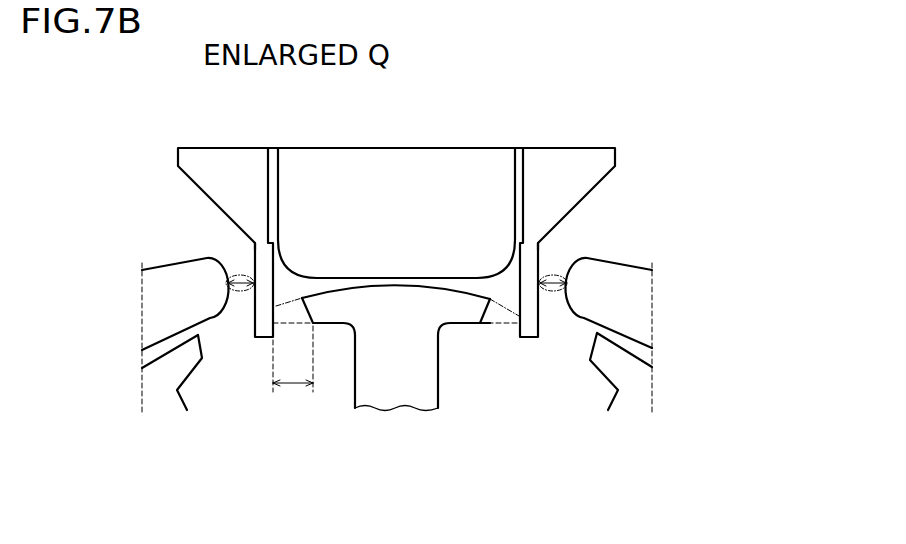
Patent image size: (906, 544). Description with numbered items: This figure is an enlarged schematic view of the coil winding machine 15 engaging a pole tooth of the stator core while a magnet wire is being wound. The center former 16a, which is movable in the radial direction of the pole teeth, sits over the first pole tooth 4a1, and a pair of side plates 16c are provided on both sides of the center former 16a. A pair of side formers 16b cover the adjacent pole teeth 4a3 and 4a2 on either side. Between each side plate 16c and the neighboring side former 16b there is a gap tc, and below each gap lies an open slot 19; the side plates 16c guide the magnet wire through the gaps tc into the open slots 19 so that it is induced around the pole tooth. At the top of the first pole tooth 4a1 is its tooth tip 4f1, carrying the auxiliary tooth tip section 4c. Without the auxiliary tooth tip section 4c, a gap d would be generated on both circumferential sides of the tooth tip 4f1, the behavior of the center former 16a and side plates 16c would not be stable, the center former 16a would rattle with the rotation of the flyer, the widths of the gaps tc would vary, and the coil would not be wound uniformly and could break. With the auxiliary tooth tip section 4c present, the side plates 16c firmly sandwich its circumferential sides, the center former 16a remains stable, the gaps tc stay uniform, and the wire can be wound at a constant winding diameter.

The coil winding machine 15 is at (175, 149).
The center former 16a is at (422, 167).
The side plate 16c is at (248, 254).
The gap between side plate and side former tc is at (234, 274).
The side former 16b is at (398, 335).
The pole tooth 4a3 is at (158, 400).
The pole tooth 4a2 is at (628, 402).
The open slot 19 is at (230, 383).
The auxiliary tooth tip section 4c is at (516, 320).
The first pole tooth 4a1 is at (438, 368).
The tooth tip 4f1 is at (481, 326).
The gap d is at (293, 373).